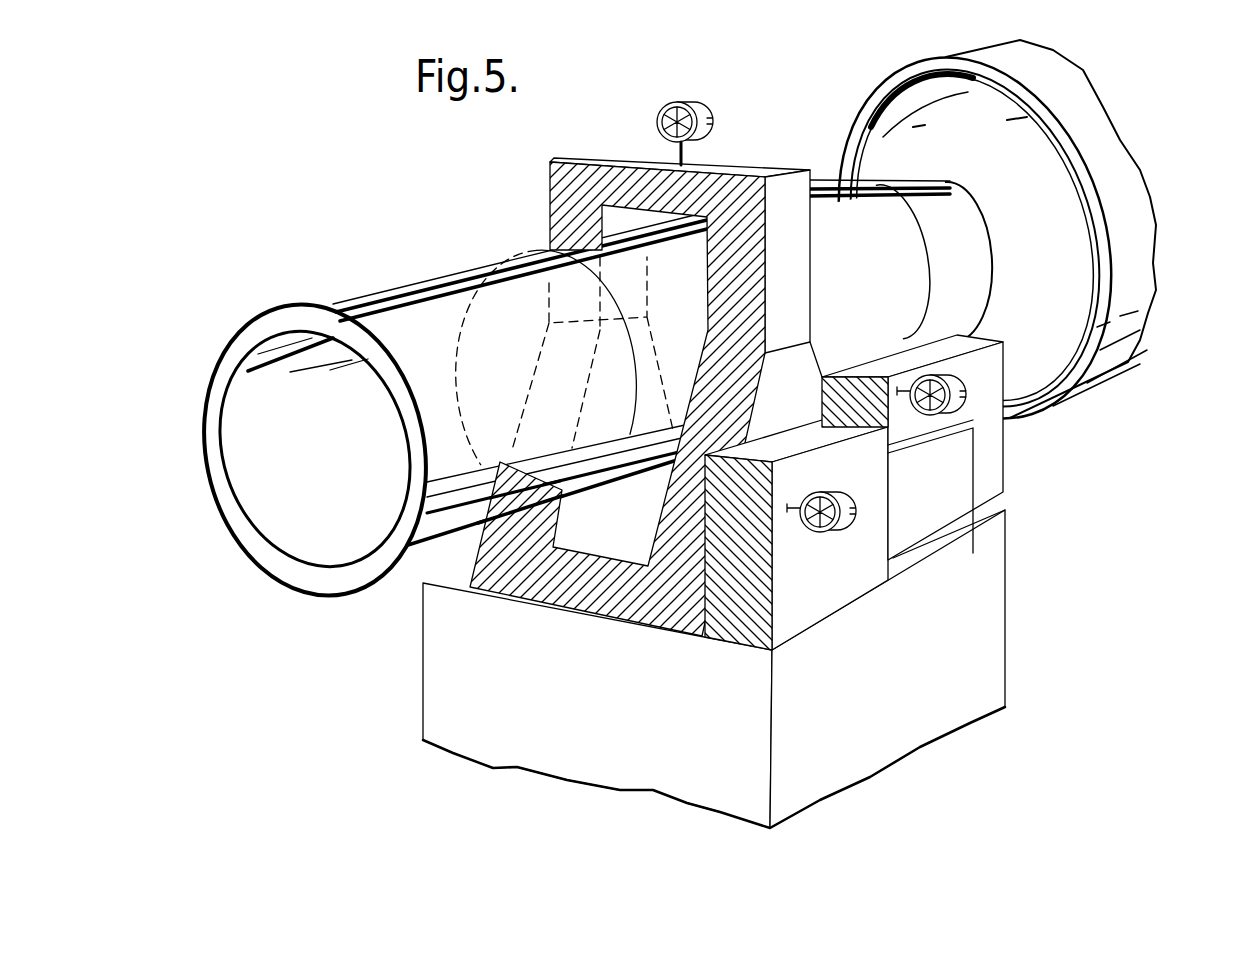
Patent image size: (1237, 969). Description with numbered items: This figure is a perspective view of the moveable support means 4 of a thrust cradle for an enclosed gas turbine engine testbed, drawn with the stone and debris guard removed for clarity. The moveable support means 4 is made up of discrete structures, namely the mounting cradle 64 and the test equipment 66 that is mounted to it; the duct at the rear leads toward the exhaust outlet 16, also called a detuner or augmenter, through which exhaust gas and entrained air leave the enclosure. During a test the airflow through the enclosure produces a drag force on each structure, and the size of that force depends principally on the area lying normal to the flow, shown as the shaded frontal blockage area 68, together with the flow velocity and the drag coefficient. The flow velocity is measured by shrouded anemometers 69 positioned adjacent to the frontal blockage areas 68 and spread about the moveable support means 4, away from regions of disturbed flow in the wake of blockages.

The moveable support means 4 is at (667, 425).
The exhaust outlet 16 is at (857, 123).
The mounting cradle 64 is at (550, 205).
The test equipment 66 is at (945, 513).
The frontal blockage area 68 is at (843, 373).
The shrouded anemometer 69 is at (670, 100).